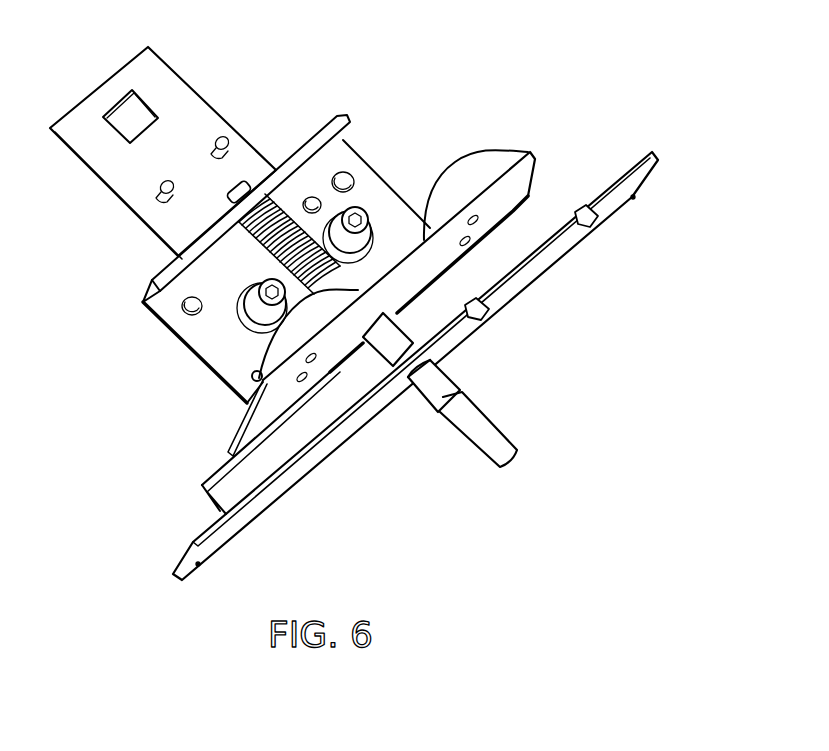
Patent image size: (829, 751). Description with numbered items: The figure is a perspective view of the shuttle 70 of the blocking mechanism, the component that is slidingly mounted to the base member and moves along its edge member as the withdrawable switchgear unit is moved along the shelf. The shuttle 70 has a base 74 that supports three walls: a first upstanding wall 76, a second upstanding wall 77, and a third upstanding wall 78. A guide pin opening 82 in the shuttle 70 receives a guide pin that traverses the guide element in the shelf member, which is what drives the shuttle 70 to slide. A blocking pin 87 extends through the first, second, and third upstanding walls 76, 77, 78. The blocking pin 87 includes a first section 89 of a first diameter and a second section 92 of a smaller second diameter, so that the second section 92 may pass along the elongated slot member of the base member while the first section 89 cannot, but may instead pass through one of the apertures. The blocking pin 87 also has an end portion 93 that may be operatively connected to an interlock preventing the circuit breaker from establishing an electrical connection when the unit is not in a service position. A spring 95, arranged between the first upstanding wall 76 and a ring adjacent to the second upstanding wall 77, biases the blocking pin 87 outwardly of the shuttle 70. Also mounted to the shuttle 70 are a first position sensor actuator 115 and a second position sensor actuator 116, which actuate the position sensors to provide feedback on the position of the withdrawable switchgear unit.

The shuttle 70 is at (552, 321).
The base 74 is at (200, 344).
The first upstanding wall 76 is at (172, 262).
The second upstanding wall 77 is at (502, 202).
The third upstanding wall 78 is at (636, 197).
The guide pin opening 82 is at (128, 127).
The blocking pin 87 is at (425, 440).
The first section 89 is at (440, 380).
The second section 92 is at (510, 445).
The end portion 93 is at (229, 188).
The spring 95 is at (290, 215).
The first position sensor actuator 115 is at (256, 374).
The second position sensor actuator 116 is at (478, 178).